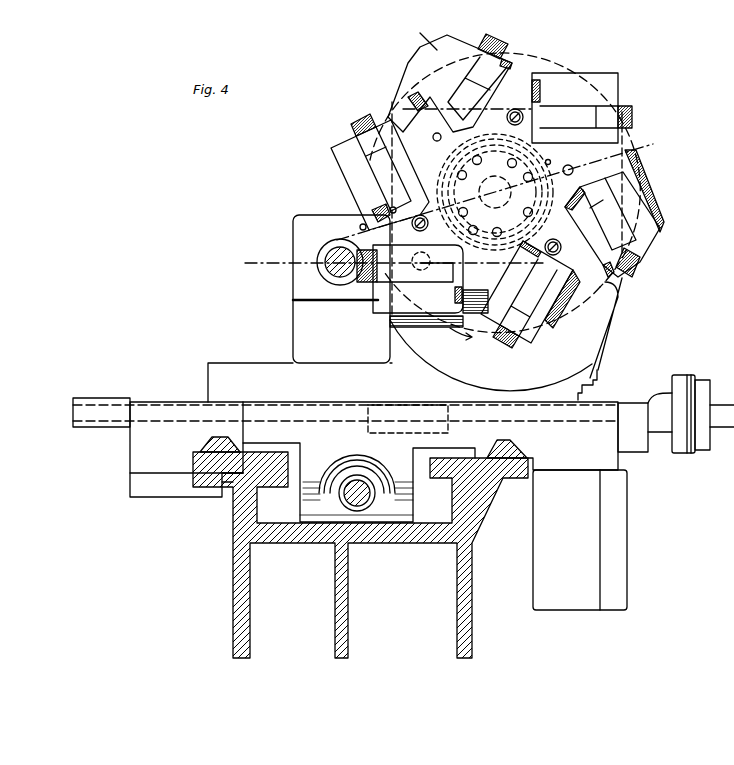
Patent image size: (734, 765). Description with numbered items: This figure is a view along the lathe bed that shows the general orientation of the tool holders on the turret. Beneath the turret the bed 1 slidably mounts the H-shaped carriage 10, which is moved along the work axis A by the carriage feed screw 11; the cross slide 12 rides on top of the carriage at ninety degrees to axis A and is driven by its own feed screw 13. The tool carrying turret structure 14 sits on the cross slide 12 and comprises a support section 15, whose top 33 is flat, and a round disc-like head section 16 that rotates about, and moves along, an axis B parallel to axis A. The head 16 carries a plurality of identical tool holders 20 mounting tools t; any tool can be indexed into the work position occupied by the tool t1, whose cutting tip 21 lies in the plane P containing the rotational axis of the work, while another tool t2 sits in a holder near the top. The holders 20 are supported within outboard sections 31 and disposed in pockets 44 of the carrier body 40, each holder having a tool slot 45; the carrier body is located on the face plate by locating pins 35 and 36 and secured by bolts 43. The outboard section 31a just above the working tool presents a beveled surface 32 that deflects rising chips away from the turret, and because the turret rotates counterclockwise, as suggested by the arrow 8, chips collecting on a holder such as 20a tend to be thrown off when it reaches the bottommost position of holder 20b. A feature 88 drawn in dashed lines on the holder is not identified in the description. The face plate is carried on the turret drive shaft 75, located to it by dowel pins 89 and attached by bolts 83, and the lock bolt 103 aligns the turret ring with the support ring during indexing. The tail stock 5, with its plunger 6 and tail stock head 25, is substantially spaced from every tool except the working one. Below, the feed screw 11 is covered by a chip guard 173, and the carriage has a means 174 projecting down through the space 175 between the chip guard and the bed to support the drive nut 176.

The bed 1 is at (225, 601).
The tail stock 5 is at (284, 246).
The plunger 6 is at (317, 269).
The direction of turret rotation 8 is at (668, 145).
The carriage 10 is at (622, 415).
The feed screw 11 is at (368, 500).
The cross slide 12 is at (208, 368).
The feed screw 13 is at (115, 398).
The tool carrying turret structure 14 is at (547, 47).
The support section 15 is at (658, 193).
The head section 16 is at (419, 58).
The tool holders 20 is at (472, 44).
The tool holder 20a is at (378, 306).
The tool holder 20b is at (528, 352).
The cutting tip 21 is at (360, 236).
The tail stock head 25 is at (296, 223).
The outboard sections 31 is at (588, 70).
The outboard section 31a is at (332, 158).
The beveled surface 32 is at (345, 186).
The top 33 is at (556, 60).
The locating pin 35 is at (568, 165).
The locating pin 36 is at (433, 134).
The carrier body 40 is at (443, 161).
The bolts 43 is at (433, 237).
The pockets 44 is at (651, 308).
The tool slot 45 is at (418, 96).
The turret drive shaft 75 is at (500, 207).
The bolts 83 is at (545, 150).
The hole 88 is at (431, 261).
The dowel pins 89 is at (547, 153).
The lock bolt 103 is at (463, 283).
The chip guard 173 is at (353, 462).
The means 174 is at (306, 527).
The space 175 is at (238, 508).
The drive nut 176 is at (360, 505).
The axis A is at (335, 256).
The axis B is at (487, 195).
The plane P is at (238, 263).
The tools t is at (502, 40).
The tool t1 is at (357, 299).
The tool t2 is at (360, 118).